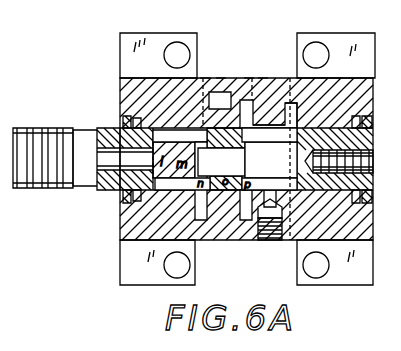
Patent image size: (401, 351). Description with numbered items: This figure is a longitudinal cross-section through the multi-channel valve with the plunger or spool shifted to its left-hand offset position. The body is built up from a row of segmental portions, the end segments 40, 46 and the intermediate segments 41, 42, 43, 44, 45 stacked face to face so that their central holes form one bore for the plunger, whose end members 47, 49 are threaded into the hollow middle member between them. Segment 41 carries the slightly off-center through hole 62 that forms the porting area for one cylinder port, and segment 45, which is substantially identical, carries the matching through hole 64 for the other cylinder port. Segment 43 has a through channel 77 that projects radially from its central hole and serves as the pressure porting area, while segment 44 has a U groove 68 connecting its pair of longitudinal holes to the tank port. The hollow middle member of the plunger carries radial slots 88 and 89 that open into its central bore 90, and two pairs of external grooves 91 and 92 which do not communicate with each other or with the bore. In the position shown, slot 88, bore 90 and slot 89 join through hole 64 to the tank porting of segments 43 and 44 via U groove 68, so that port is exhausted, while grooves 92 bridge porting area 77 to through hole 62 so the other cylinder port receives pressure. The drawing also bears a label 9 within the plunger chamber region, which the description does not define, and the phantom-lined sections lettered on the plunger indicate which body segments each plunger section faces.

The body segment 40 is at (373, 78).
The body segment 41 is at (290, 78).
The body segment 42 is at (263, 78).
The body segment 43 is at (248, 78).
The body segment 44 is at (221, 78).
The body segment 45 is at (205, 78).
The body segment 46 is at (121, 84).
The plunger member 47 is at (372, 186).
The plunger member 49 is at (107, 128).
The through hole 62 is at (300, 108).
The through hole 64 is at (200, 240).
The U groove 68 is at (220, 100).
The through channel 77 is at (252, 256).
The radial slot 88 is at (222, 176).
The radial slot 89 is at (248, 168).
The central bore 90 is at (207, 190).
The grooves 91 is at (174, 130).
The grooves 92 is at (270, 129).
The chamber 9 is at (271, 160).